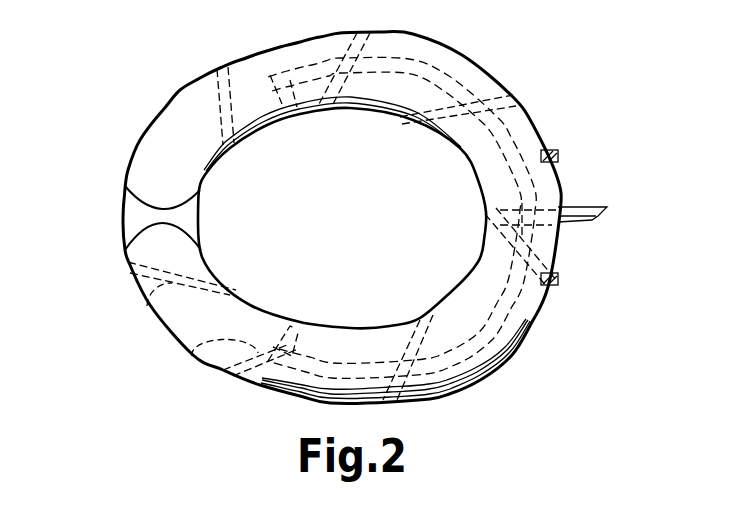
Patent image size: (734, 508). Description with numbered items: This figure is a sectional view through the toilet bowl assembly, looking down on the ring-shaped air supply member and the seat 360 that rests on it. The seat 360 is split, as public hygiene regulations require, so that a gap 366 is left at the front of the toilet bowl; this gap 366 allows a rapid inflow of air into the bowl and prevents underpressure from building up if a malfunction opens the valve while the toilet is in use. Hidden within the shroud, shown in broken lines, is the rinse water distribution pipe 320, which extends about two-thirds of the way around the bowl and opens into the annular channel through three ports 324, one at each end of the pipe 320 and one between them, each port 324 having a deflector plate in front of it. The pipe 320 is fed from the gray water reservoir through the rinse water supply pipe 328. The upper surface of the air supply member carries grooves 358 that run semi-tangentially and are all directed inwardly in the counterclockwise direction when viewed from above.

The rinse water distribution pipe 320 is at (453, 75).
The port 324 is at (300, 115).
The rinse water supply pipe 328 is at (580, 208).
The grooves 358 is at (147, 306).
The seat 360 is at (172, 124).
The gap 366 is at (150, 222).